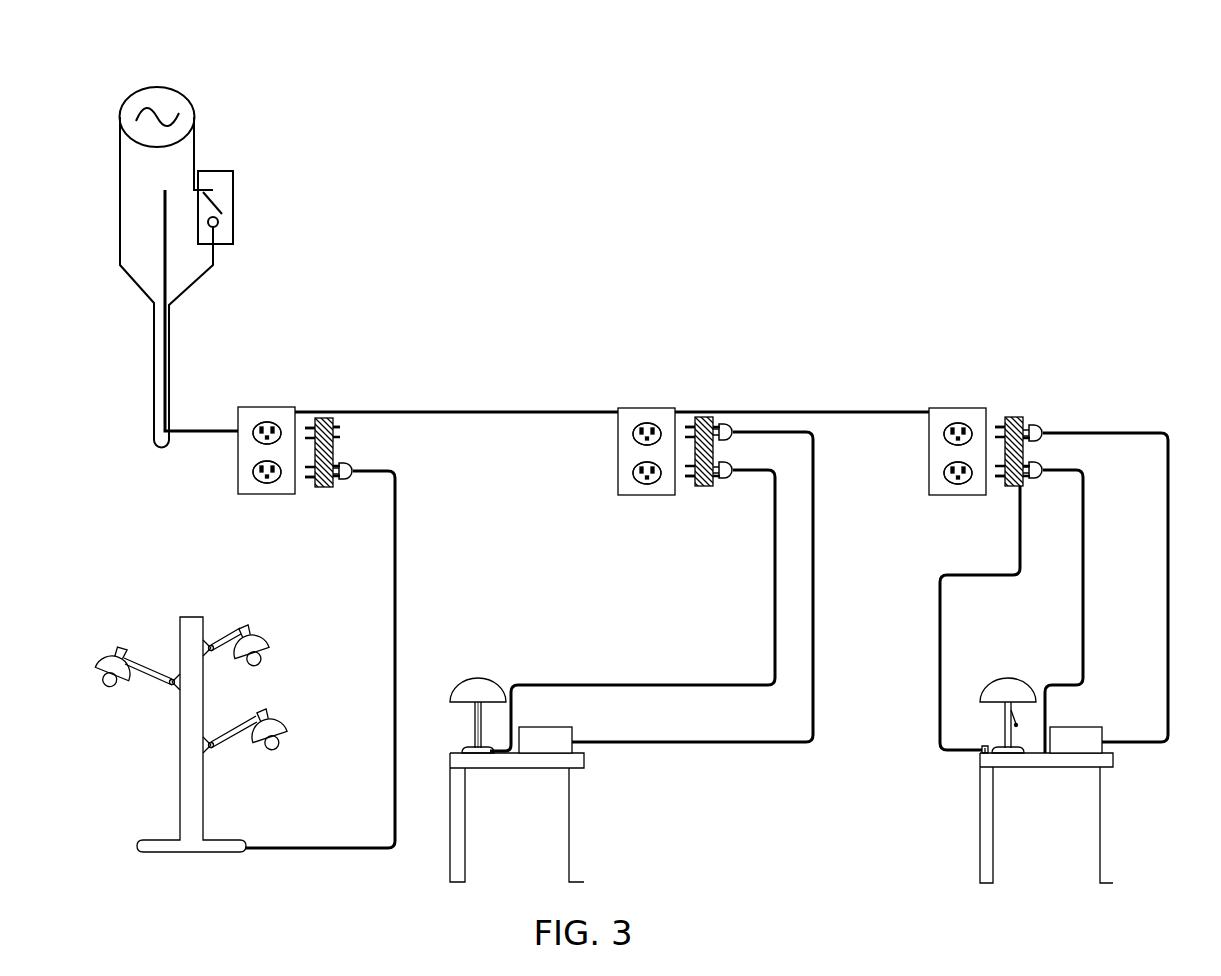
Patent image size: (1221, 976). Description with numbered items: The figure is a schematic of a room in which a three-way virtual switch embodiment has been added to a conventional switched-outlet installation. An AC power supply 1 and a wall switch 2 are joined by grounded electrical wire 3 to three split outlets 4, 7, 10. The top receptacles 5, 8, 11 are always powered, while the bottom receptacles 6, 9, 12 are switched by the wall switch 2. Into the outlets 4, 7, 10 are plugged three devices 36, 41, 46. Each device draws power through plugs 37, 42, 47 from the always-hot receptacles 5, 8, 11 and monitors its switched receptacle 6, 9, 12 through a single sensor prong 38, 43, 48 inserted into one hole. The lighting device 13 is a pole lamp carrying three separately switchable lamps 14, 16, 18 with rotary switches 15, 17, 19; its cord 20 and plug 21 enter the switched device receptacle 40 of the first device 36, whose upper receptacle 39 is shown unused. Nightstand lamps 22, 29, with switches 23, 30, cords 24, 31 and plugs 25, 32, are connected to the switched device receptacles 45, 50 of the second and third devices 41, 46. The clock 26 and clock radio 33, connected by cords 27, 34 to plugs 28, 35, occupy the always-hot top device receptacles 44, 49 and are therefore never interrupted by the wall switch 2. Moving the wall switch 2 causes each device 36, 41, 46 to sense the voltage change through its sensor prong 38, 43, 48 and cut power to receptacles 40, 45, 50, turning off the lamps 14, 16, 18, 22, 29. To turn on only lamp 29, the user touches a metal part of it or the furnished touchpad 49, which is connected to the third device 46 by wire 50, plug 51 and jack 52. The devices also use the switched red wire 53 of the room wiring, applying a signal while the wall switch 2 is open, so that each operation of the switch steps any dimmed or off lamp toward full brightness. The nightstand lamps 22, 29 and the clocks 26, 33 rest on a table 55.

The AC power supply 1 is at (156, 86).
The wall switch 2 is at (215, 171).
The electrical wire 3 is at (168, 368).
The outlet 4 is at (265, 407).
The top receptacle 5 is at (253, 436).
The bottom receptacle 6 is at (268, 483).
The outlet 7 is at (645, 408).
The top receptacle 8 is at (632, 435).
The bottom receptacle 9 is at (645, 483).
The outlet 10 is at (955, 408).
The top receptacle 11 is at (943, 435).
The bottom receptacle 12 is at (957, 483).
The lighting device 13 is at (188, 853).
The switchable lamp 14 is at (95, 672).
The rotary switch 15 is at (150, 665).
The switchable lamp 16 is at (272, 640).
The rotary switch 17 is at (228, 637).
The switchable lamp 18 is at (284, 726).
The rotary switch 19 is at (236, 727).
The cord 20 is at (392, 773).
The plug 21 is at (347, 464).
The nightstand lamp 22 is at (478, 678).
The switch 23 is at (485, 748).
The cord 24 is at (773, 585).
The plug 25 is at (738, 468).
The clock 26 is at (545, 727).
The cord 27 is at (817, 582).
The plug 28 is at (738, 428).
The nightstand lamp 29 is at (1008, 678).
The switch 30 is at (1018, 716).
The cord 31 is at (1081, 590).
The plug 32 is at (1043, 470).
The clock radio 33 is at (1118, 743).
The cord 34 is at (1166, 572).
The plug 35 is at (1045, 433).
The device 36 is at (325, 488).
The plug 37 is at (310, 427).
The sensor prong 38 is at (308, 478).
The upper adapter receptacle 39 is at (340, 428).
The switched device receptacle 40 is at (340, 462).
The device 41 is at (705, 488).
The plug 42 is at (690, 427).
The sensor prong 43 is at (690, 478).
The top device receptacle 44 is at (718, 428).
The switched device receptacle 45 is at (722, 482).
The device 46 is at (1012, 490).
The plug 47 is at (1000, 428).
The sensor prong 48 is at (1000, 478).
The top device receptacle 49 is at (1028, 430).
The switched device receptacle 50 is at (938, 650).
The plug 51 is at (1022, 488).
The jack 52 is at (1025, 484).
The switched red wire 53 is at (1045, 440).
The table 55 is at (980, 764).